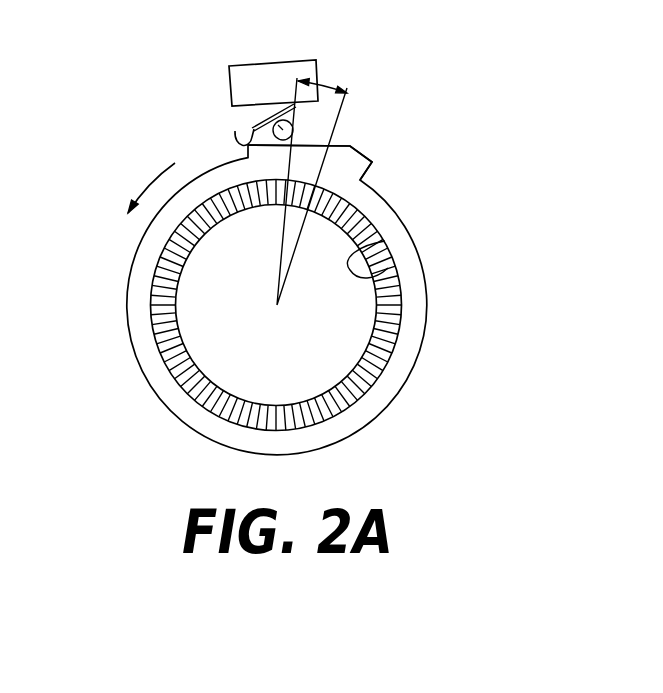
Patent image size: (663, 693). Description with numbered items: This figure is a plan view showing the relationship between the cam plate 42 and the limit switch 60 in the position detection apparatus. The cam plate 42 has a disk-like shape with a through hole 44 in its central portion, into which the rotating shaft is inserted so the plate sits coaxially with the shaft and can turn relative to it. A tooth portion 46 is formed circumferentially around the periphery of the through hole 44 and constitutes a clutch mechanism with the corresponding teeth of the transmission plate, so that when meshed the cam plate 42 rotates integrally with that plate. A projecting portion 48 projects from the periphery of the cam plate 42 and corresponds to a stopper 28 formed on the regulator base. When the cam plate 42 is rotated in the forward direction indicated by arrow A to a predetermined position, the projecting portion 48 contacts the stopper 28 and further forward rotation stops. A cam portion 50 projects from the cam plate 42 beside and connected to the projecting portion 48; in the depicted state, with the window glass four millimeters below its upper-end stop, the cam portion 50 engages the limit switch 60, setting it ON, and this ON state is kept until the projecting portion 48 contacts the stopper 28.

The stopper 28 is at (283, 62).
The cam plate 42 is at (427, 290).
The through hole 44 is at (385, 241).
The tooth portion 46 is at (382, 358).
The projecting portion 48 is at (352, 147).
The cam portion 50 is at (253, 127).
The limit switch 60 is at (229, 90).
The arrow indicating forward direction A is at (145, 185).